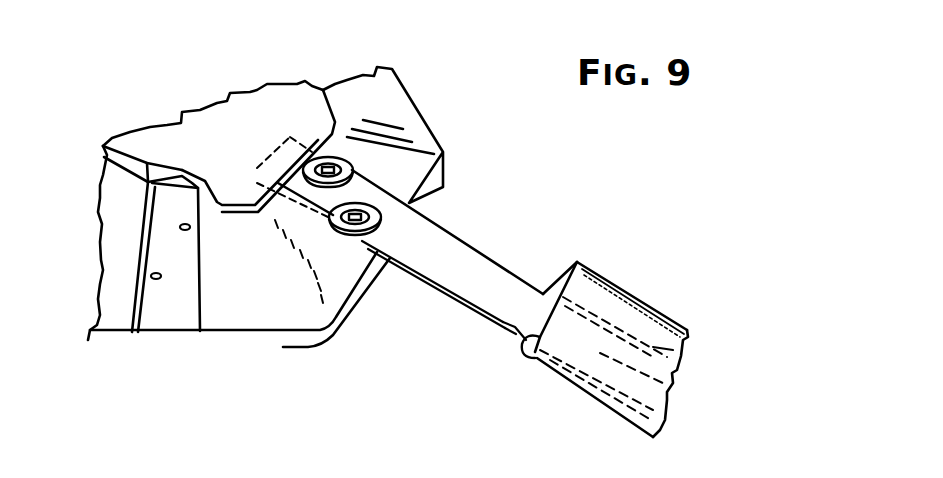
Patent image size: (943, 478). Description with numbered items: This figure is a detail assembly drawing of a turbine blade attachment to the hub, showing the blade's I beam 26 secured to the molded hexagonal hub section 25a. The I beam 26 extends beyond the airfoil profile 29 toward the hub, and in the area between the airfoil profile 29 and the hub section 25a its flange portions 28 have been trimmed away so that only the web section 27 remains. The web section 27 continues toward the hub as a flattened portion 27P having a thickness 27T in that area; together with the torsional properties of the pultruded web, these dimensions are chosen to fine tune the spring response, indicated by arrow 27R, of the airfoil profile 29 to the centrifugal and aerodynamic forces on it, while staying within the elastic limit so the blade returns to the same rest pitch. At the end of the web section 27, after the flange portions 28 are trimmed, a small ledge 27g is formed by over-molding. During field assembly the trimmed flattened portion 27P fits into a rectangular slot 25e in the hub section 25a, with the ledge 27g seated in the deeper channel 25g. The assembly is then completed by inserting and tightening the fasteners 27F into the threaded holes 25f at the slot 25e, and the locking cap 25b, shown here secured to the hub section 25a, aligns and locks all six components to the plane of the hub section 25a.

The hub section 25a is at (370, 106).
The locking cap 25b is at (208, 134).
The rectangular slot 25e is at (180, 325).
The threaded holes 25f is at (151, 274).
The channel 25g is at (107, 173).
The I beam 26 is at (693, 355).
The web section 27 is at (630, 359).
The fasteners 27F is at (372, 210).
The ledge 27g is at (257, 183).
The flattened portion 27P is at (446, 270).
The spring response arrow 27R is at (555, 257).
The thickness 27T is at (413, 249).
The flange portions 28 is at (520, 340).
The airfoil profile 29 is at (618, 312).